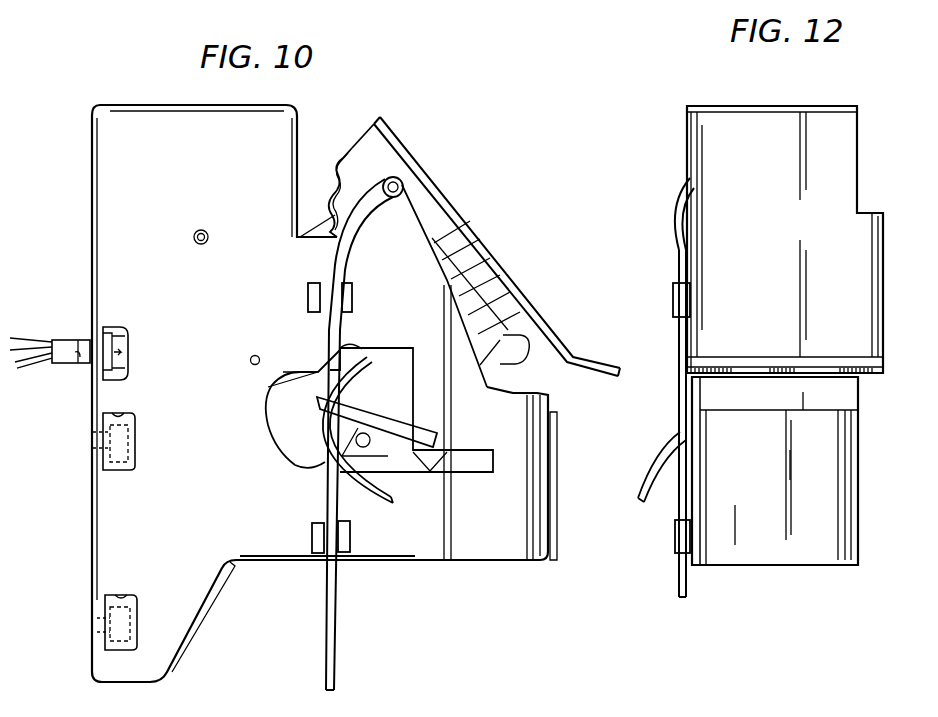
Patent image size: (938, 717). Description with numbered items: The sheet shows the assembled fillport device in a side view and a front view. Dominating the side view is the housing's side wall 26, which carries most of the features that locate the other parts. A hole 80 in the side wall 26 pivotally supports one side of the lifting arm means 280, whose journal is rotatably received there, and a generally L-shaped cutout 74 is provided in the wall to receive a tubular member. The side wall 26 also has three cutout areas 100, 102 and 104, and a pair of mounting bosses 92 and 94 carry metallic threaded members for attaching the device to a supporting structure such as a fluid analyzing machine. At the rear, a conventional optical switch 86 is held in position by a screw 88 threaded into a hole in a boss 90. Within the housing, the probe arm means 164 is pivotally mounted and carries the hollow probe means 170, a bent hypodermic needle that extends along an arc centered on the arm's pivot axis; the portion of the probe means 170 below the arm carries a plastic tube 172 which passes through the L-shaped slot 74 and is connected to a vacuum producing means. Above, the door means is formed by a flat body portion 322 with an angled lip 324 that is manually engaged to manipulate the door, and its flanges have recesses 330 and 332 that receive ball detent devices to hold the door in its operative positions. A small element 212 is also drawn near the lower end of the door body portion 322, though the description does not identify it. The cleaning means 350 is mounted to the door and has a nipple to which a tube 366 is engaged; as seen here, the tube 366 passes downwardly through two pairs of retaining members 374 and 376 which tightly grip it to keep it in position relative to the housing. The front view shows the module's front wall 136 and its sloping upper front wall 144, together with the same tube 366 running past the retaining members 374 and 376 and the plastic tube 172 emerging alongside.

In FIG. 10, the side wall 26 is at (208, 161).
In FIG. 10, the L-shaped cutout 74 is at (416, 426).
In FIG. 10, the hole 80 is at (207, 243).
In FIG. 10, the optical switch 86 is at (55, 333).
In FIG. 10, the screw 88 is at (77, 353).
In FIG. 10, the boss 90 is at (108, 330).
In FIG. 10, the mounting boss 92 is at (122, 470).
In FIG. 10, the mounting boss 94 is at (108, 648).
In FIG. 10, the cutout area 100 is at (127, 337).
In FIG. 10, the cutout area 102 is at (130, 414).
In FIG. 10, the cutout area 104 is at (125, 596).
In FIG. 12, the front wall 136 is at (770, 483).
In FIG. 12, the sloping upper front wall 144 is at (804, 395).
In FIG. 10, the probe arm means 164 is at (362, 432).
In FIG. 10, the probe means 170 is at (386, 352).
In FIG. 10, the plastic tube 172 is at (388, 498).
In FIG. 12, the plastic tube 172 is at (645, 483).
In FIG. 10, the stop 212 is at (512, 356).
In FIG. 10, the lifting arm means 280 is at (297, 400).
In FIG. 10, the flat body portion 322 is at (500, 247).
In FIG. 12, the flat body portion 322 is at (778, 215).
In FIG. 10, the angled lip 324 is at (598, 374).
In FIG. 12, the angled lip 324 is at (833, 360).
In FIG. 10, the recess 330 is at (338, 150).
In FIG. 10, the recess 332 is at (332, 193).
In FIG. 10, the cleaning means 350 is at (508, 291).
In FIG. 10, the tube 366 is at (338, 672).
In FIG. 12, the tube 366 is at (672, 190).
In FIG. 10, the retaining members 374 is at (352, 300).
In FIG. 12, the retaining members 374 is at (673, 302).
In FIG. 10, the retaining members 376 is at (312, 542).
In FIG. 12, the retaining members 376 is at (676, 542).